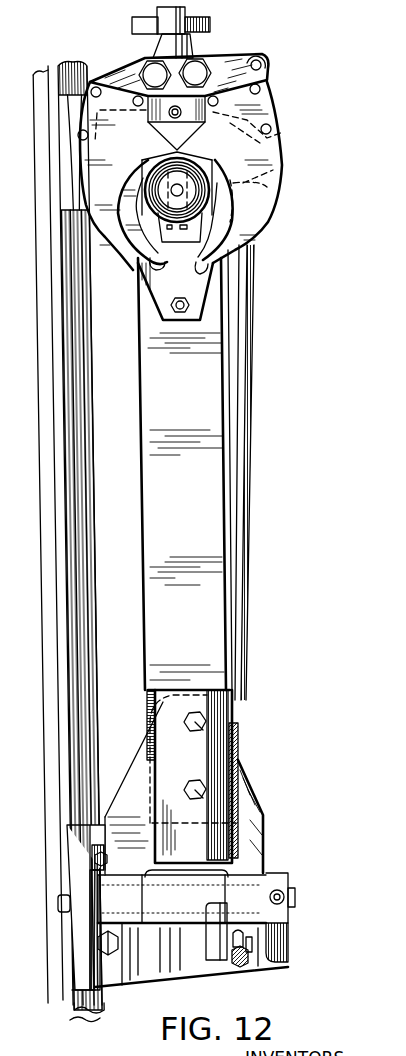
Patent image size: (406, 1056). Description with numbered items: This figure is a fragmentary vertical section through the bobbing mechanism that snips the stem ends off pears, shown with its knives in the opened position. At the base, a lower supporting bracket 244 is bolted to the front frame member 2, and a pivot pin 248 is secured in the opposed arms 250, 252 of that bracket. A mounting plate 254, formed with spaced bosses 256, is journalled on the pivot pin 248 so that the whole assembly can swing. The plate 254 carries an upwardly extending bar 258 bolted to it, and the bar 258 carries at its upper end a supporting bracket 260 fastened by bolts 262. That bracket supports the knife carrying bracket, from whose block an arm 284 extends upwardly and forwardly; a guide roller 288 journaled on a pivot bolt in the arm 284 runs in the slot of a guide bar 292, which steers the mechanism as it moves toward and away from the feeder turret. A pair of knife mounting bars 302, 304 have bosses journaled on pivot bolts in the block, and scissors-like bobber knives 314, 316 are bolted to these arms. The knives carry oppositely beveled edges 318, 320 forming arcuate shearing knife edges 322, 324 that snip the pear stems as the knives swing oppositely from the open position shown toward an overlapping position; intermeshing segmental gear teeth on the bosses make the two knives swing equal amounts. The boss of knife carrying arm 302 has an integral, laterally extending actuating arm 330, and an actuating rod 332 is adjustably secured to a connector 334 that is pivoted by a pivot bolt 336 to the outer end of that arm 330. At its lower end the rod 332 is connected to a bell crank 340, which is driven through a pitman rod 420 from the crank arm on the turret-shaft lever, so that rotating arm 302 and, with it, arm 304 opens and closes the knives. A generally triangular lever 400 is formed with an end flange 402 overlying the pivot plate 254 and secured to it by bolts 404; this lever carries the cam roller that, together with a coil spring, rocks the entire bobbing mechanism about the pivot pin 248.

The front frame member 2 is at (78, 622).
The lower supporting bracket 244 is at (200, 963).
The pivot pin 248 is at (290, 893).
The arm 250 is at (272, 932).
The arm 252 is at (80, 965).
The mounting plate 254 is at (248, 797).
The bosses 256 is at (242, 885).
The bar 258 is at (180, 487).
The supporting bracket 260 is at (205, 278).
The bolts 262 is at (205, 284).
The arm 284 is at (173, 46).
The guide roller 288 is at (160, 24).
The guide bar 292 is at (203, 22).
The knife mounting bar 302 is at (227, 73).
The knife mounting bar 304 is at (118, 73).
The bobber knife 314 is at (257, 208).
The bobber knife 316 is at (118, 258).
The beveled edge 318 is at (234, 188).
The beveled edge 320 is at (126, 188).
The shearing knife edge 322 is at (210, 173).
The shearing knife edge 324 is at (133, 175).
The actuating arm 330 is at (262, 62).
The actuating rod 332 is at (244, 533).
The connector 334 is at (56, 905).
The pivot bolt 336 is at (262, 80).
The bell crank 340 is at (180, 913).
The lever 400 is at (240, 738).
The end flange 402 is at (163, 697).
The bolts 404 is at (196, 790).
The pitman rod 420 is at (248, 963).